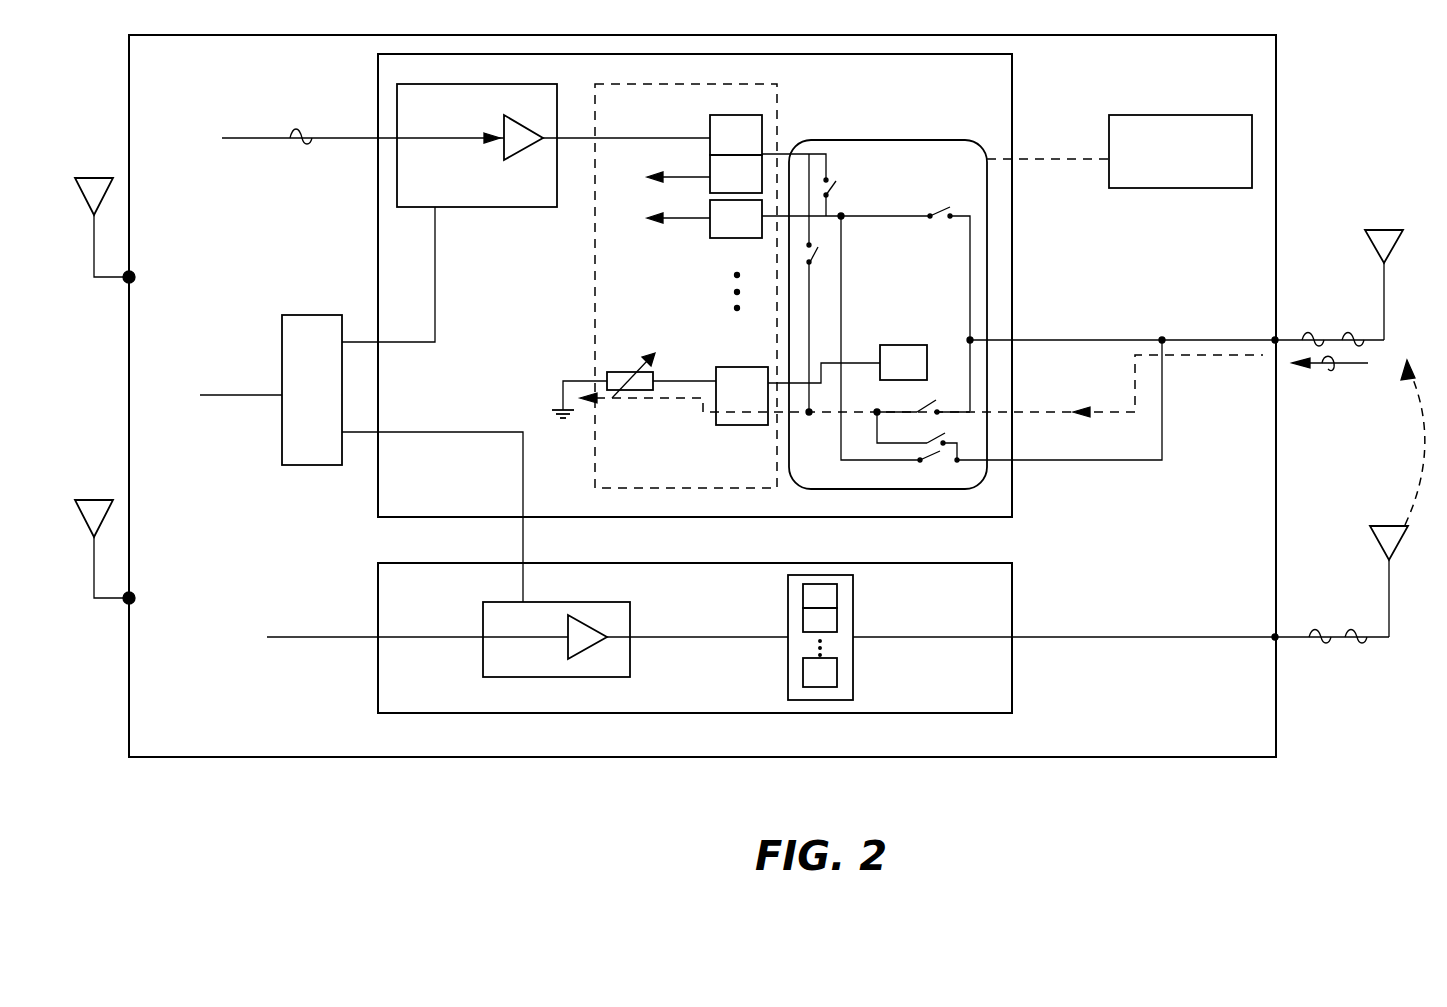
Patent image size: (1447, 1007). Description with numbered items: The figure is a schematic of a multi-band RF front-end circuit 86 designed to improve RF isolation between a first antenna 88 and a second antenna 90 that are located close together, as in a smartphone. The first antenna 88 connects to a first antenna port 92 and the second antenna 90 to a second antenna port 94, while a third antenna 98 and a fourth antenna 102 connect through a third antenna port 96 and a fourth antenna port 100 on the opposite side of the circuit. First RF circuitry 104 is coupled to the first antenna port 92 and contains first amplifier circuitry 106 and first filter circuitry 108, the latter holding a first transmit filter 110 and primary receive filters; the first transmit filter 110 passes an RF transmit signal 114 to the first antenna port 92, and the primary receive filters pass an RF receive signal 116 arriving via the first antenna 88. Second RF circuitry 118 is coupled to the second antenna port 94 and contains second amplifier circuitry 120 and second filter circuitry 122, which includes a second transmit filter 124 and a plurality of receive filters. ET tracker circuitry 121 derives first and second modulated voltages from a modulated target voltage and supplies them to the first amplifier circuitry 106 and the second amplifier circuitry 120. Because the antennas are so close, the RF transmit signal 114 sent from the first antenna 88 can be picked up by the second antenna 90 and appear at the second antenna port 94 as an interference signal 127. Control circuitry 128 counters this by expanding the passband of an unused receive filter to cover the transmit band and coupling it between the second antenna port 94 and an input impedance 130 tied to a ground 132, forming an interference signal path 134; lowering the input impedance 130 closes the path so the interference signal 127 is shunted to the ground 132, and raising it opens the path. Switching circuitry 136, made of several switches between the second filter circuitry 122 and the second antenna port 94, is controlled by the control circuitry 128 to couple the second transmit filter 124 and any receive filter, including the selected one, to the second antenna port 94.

The multi-band RF front-end circuit 86 is at (1222, 725).
The first antenna 88 is at (1406, 538).
The second antenna 90 is at (1402, 244).
The first antenna port 92 is at (1278, 635).
The second antenna port 94 is at (1278, 338).
The third antenna port 96 is at (136, 276).
The third antenna 98 is at (94, 178).
The fourth antenna port 100 is at (136, 597).
The fourth antenna 102 is at (94, 500).
The first RF circuitry 104 is at (719, 691).
The first amplifier circuitry 106 is at (530, 667).
The first filter circuitry 108 is at (788, 597).
The first transmit filter 110 is at (837, 593).
The RF transmit signal 114 is at (300, 146).
The RF receive signal 116 is at (1352, 334).
The second RF circuitry 118 is at (541, 315).
The second amplifier circuitry 120 is at (535, 190).
The ET tracker circuitry 121 is at (327, 393).
The second filter circuitry 122 is at (660, 479).
The second transmit filter 124 is at (751, 145).
The interference signal 127 is at (1330, 370).
The control circuitry 128 is at (1195, 161).
The input impedance 130 is at (626, 372).
The ground 132 is at (563, 405).
The interference signal path 134 is at (917, 372).
The switching circuitry 136 is at (905, 140).